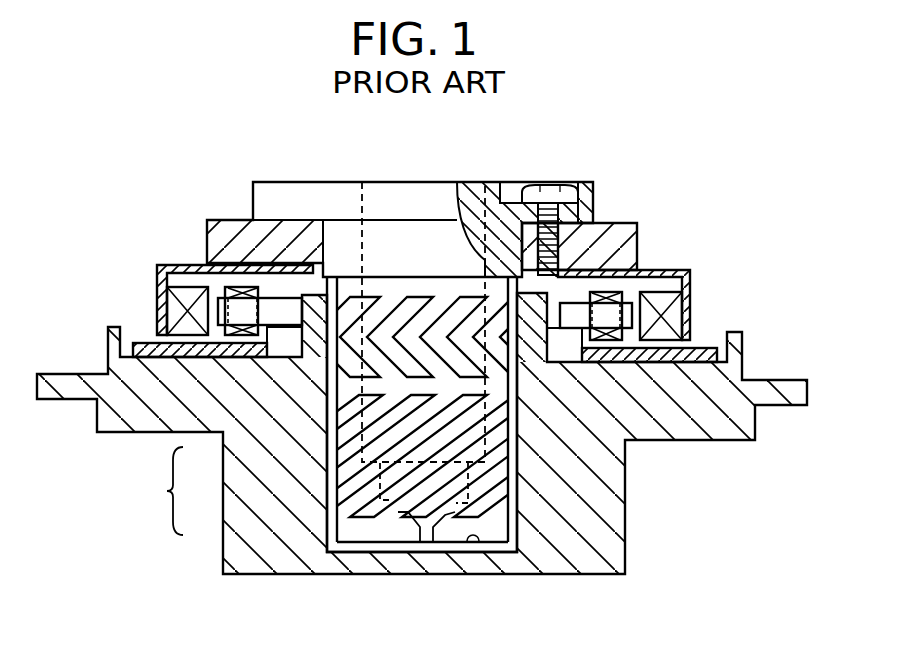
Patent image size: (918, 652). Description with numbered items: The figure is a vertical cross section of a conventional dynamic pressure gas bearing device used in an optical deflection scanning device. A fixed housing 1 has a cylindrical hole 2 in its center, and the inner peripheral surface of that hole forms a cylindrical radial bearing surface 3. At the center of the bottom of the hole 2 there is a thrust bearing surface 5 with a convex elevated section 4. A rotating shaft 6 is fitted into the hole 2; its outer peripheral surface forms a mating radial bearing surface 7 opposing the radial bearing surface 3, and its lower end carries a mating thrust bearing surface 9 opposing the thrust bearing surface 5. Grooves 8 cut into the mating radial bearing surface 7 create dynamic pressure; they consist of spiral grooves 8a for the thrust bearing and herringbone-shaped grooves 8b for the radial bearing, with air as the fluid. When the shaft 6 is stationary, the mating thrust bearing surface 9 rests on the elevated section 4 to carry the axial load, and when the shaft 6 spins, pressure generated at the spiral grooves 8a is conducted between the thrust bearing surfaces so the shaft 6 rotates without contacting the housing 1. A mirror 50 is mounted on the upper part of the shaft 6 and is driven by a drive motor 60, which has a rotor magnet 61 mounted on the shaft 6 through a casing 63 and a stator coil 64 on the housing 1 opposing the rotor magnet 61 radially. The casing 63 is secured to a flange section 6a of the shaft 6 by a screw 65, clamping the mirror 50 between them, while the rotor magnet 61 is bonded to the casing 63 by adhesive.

The housing 1 is at (287, 545).
The cylindrical hole 2 is at (341, 543).
The radial bearing surface 3 is at (327, 510).
The elevated section 4 is at (418, 551).
The thrust bearing surface 5 is at (486, 548).
The shaft 6 is at (427, 205).
The flange section 6a is at (583, 208).
The mating radial bearing surface 7 is at (397, 380).
The grooves 8 is at (167, 491).
The spiral grooves 8a is at (332, 428).
The herringbone-shaped grooves 8b is at (335, 388).
The mating thrust bearing surface 9 is at (482, 541).
The mirror 50 is at (628, 252).
The drive motor 60 is at (469, 299).
The rotor magnet 61 is at (673, 315).
The casing 63 is at (615, 283).
The stator coil 64 is at (655, 268).
The screw 65 is at (554, 185).